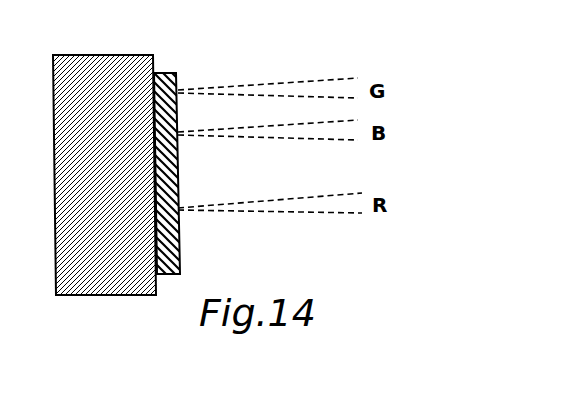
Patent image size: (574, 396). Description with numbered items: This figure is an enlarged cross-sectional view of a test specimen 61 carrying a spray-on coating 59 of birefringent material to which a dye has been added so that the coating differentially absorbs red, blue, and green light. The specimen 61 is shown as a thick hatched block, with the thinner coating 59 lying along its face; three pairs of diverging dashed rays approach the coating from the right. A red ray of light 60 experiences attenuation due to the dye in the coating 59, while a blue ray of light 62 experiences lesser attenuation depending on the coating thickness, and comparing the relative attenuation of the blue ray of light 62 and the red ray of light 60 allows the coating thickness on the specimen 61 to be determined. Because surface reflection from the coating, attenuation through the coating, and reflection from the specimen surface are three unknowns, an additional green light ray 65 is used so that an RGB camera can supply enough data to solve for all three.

The specimen 61 is at (107, 55).
The coating 59 is at (165, 73).
The green light ray 65 is at (273, 84).
The blue ray of light 62 is at (305, 140).
The red ray of light 60 is at (323, 215).